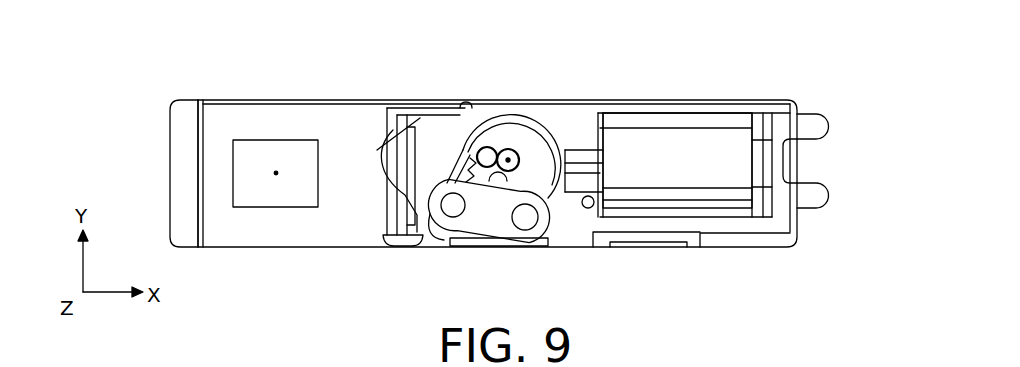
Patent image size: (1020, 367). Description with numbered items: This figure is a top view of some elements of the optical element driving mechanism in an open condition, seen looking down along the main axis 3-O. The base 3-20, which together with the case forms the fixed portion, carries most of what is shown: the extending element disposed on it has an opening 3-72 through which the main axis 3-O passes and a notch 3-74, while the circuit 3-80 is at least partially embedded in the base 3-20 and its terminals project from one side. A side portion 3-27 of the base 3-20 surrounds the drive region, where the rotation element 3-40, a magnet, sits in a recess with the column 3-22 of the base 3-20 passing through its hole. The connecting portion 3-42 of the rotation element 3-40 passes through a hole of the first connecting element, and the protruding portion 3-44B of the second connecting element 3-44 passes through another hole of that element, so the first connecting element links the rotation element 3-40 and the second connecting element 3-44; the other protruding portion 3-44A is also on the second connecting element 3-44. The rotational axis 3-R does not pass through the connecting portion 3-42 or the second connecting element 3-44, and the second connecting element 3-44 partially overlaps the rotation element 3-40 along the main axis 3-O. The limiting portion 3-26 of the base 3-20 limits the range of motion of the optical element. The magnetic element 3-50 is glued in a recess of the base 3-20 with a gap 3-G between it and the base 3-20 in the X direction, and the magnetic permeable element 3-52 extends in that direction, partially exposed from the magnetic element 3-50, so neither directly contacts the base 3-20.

The base 3-20 is at (787, 96).
The main axis 3-O is at (276, 173).
The opening 3-72 is at (253, 157).
The side portion 3-27 is at (422, 160).
The notch 3-74 is at (386, 108).
The rotation element 3-40 is at (552, 145).
The column 3-22 is at (508, 160).
The rotational axis 3-R is at (527, 152).
The protruding portion 3-44A is at (487, 155).
The second connecting element 3-44 is at (472, 185).
The protruding portion 3-44B is at (453, 207).
The connecting portion 3-42 is at (525, 217).
The limiting portion 3-26 is at (588, 208).
The magnetic permeable element 3-52 is at (580, 157).
The gap 3-G is at (607, 124).
The magnetic element 3-50 is at (677, 147).
The circuit 3-80 is at (828, 124).